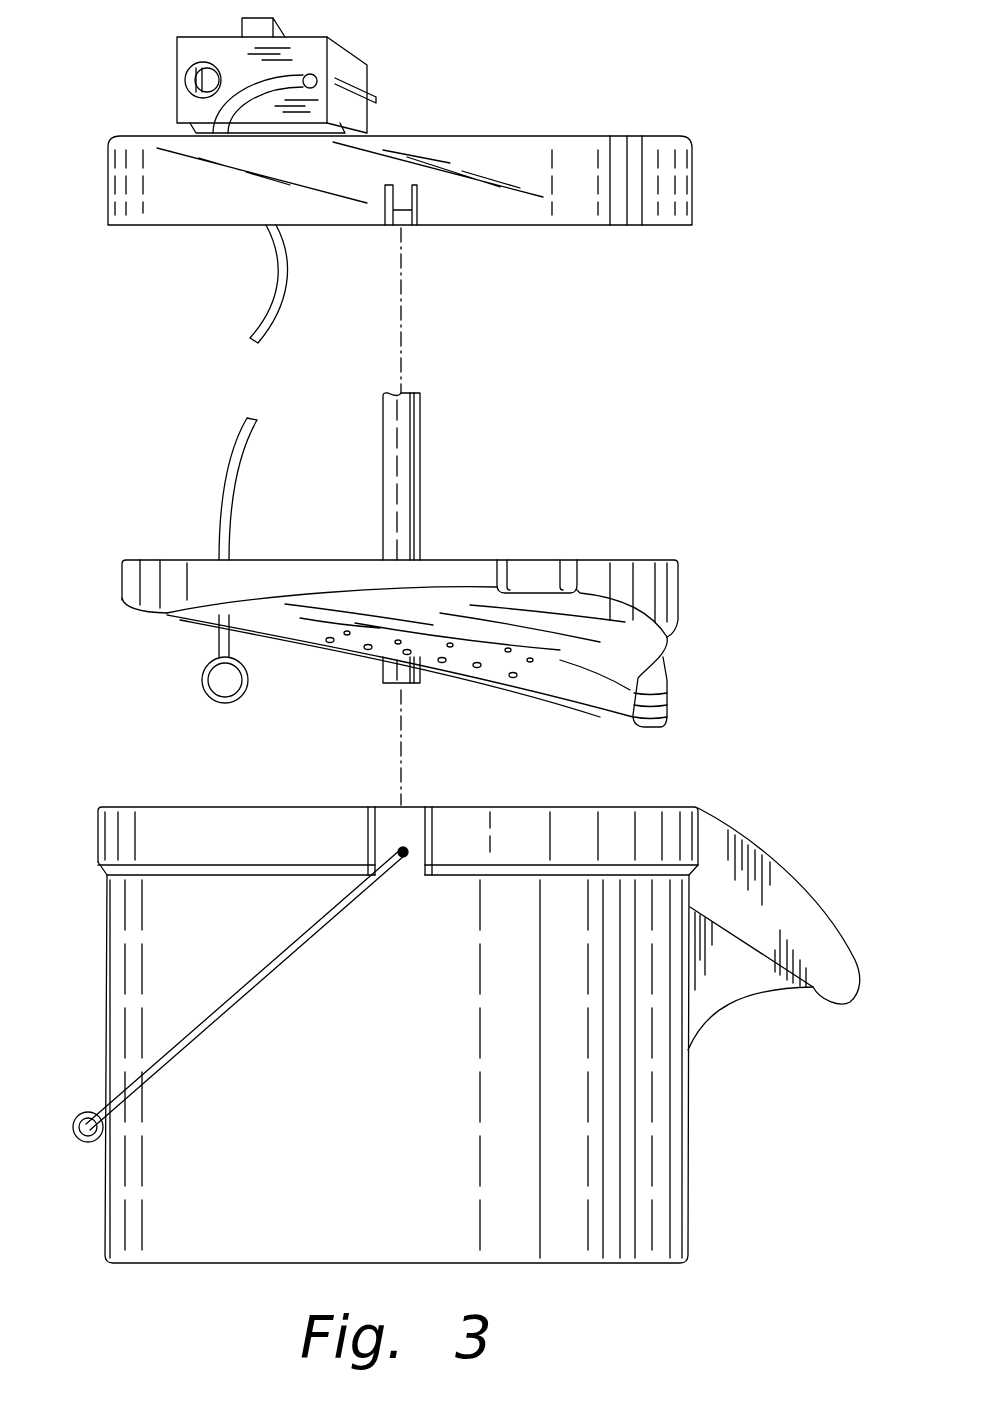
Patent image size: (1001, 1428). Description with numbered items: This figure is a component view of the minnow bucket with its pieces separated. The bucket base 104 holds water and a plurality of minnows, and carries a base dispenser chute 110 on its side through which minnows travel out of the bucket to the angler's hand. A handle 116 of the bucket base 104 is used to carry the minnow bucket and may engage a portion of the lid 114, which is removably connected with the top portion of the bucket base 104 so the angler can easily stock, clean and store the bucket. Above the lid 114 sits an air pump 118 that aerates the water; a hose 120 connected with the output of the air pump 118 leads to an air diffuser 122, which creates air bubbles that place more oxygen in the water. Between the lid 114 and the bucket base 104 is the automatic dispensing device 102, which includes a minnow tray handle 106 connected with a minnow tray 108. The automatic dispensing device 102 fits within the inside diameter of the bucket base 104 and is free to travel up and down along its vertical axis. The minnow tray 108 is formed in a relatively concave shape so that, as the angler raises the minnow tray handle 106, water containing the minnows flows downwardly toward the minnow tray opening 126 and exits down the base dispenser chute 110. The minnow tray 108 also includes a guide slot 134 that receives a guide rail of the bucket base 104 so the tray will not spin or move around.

The automatic dispensing device 102 is at (577, 533).
The bucket base 104 is at (122, 933).
The minnow tray handle 106 is at (387, 437).
The minnow tray 108 is at (658, 560).
The base dispenser chute 110 is at (783, 873).
The lid 114 is at (512, 136).
The handle 116 is at (237, 990).
The air pump 118 is at (313, 30).
The hose 120 is at (268, 282).
The air diffuser 122 is at (203, 676).
The minnow tray opening 126 is at (675, 627).
The guide slot 134 is at (527, 567).